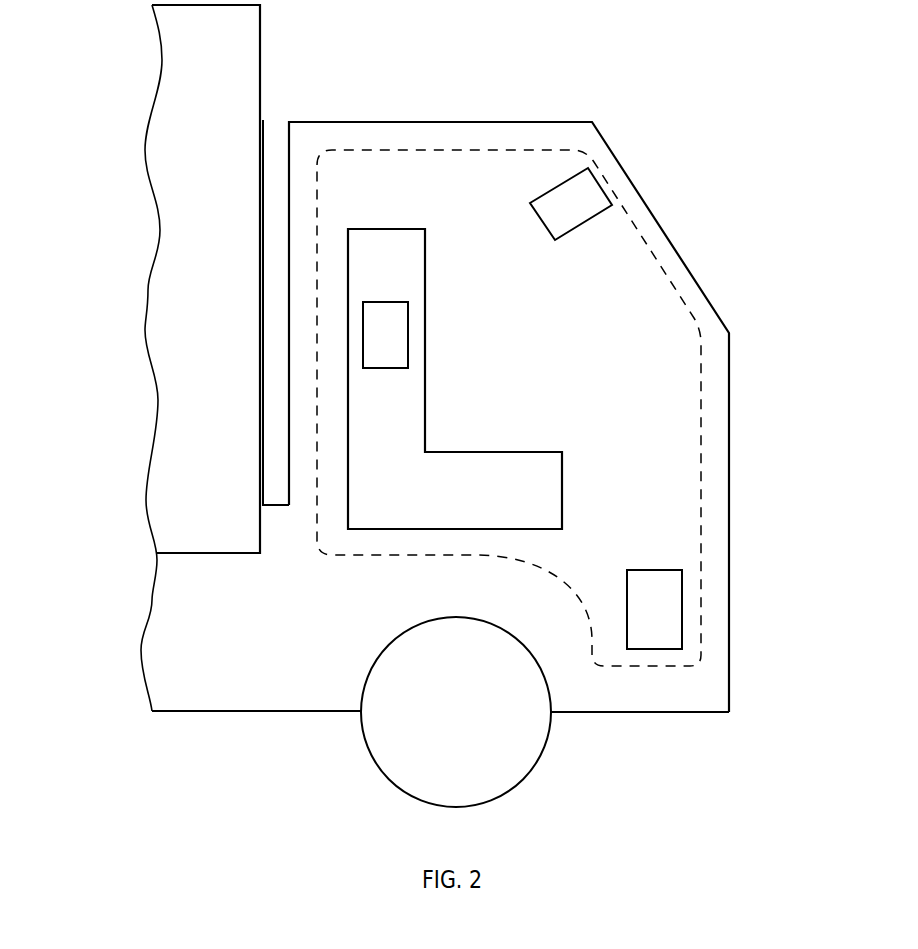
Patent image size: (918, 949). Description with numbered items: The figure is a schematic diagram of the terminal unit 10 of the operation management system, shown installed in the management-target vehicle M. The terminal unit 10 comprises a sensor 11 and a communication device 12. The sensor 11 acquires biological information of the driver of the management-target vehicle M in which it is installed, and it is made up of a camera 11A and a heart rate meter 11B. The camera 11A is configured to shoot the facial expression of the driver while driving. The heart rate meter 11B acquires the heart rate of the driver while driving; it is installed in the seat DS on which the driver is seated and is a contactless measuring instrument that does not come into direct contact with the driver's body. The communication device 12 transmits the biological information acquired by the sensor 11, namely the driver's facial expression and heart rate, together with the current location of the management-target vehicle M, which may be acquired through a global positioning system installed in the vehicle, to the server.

The terminal unit 10 is at (497, 150).
The sensor 11 is at (635, 204).
The camera 11A is at (588, 190).
The heart rate meter 11B is at (378, 338).
The communication device 12 is at (667, 613).
The seat DS is at (537, 495).
The management-target vehicle M is at (247, 687).